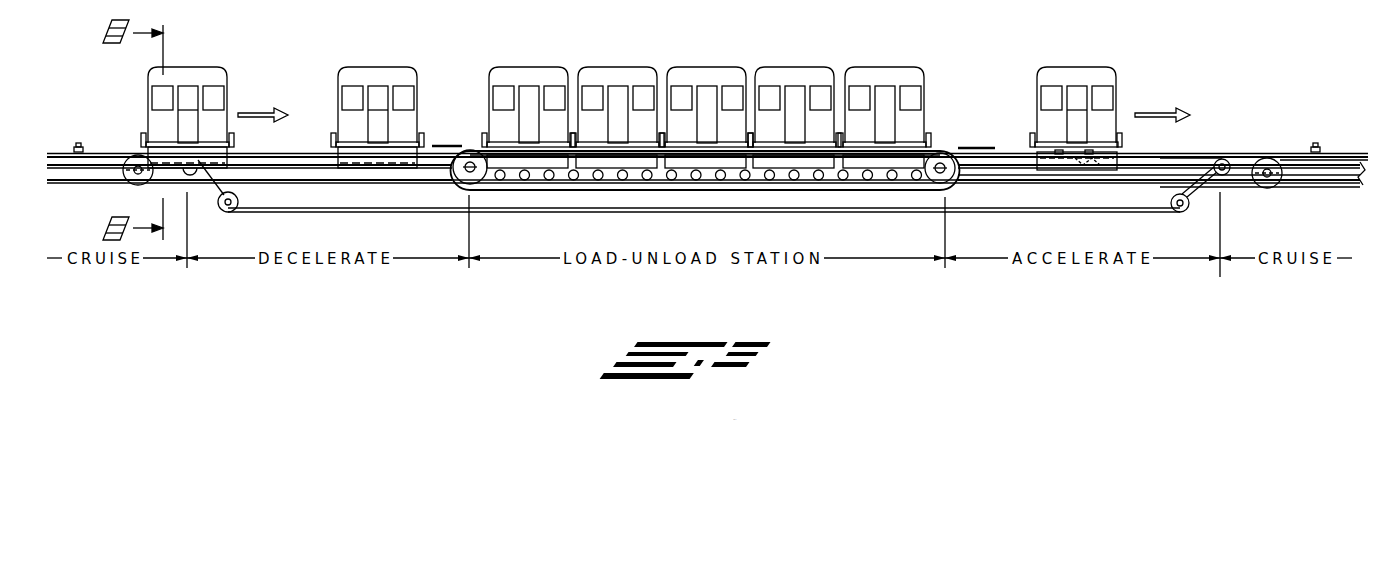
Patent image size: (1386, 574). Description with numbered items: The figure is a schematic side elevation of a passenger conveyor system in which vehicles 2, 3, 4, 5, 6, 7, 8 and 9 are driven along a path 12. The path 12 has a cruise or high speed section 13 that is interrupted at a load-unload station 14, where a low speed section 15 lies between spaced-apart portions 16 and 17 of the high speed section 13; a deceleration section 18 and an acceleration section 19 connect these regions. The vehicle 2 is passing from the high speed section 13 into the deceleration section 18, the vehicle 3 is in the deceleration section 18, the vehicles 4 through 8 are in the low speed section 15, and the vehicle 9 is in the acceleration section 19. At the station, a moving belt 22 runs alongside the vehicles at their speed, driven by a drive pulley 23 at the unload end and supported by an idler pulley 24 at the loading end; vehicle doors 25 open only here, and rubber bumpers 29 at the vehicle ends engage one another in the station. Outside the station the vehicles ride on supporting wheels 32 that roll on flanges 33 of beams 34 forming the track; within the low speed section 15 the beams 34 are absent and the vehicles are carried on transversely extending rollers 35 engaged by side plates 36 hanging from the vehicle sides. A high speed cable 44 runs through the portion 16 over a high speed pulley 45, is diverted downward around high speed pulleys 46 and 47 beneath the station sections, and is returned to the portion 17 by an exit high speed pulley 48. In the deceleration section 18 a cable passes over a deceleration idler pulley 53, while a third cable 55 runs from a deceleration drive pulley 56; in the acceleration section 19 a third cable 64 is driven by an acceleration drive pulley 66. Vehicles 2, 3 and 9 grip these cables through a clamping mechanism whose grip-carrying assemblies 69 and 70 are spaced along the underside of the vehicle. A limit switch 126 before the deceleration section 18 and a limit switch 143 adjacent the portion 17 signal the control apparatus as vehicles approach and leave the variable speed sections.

The vehicle 2 is at (196, 67).
The vehicle 3 is at (385, 67).
The vehicle 4 is at (532, 67).
The vehicle 5 is at (613, 67).
The vehicle 6 is at (706, 67).
The vehicle 7 is at (789, 67).
The vehicle 8 is at (884, 67).
The vehicle 9 is at (1077, 67).
The path 12 is at (1293, 177).
The high speed section 13 is at (98, 152).
The load-unload station 14 is at (820, 250).
The low speed section 15 is at (673, 202).
The portion of the high speed section 16 is at (62, 182).
The portion of the high speed section 17 is at (1320, 189).
The deceleration section 18 is at (297, 206).
The acceleration section 19 is at (1167, 156).
The belt 22 is at (935, 150).
The drive pulley 23 is at (958, 187).
The idler pulley 24 is at (465, 152).
The door 25 is at (192, 117).
The bumper 29 is at (144, 133).
The supporting wheel 32 is at (1033, 153).
The flange 33 is at (1356, 160).
The beam 34 is at (1347, 180).
The roller 35 is at (647, 181).
The side plate 36 is at (152, 153).
The high speed cable 44 is at (1330, 158).
The high speed pulley 45 is at (189, 172).
The high speed pulley 46 is at (240, 213).
The high speed pulley 47 is at (1183, 213).
The exit high speed pulley 48 is at (1221, 158).
The deceleration idler pulley 53 is at (385, 191).
The third cable 55 is at (263, 152).
The deceleration drive pulley 56 is at (134, 186).
The third cable 64 is at (1233, 190).
The acceleration drive pulley 66 is at (1263, 158).
The grip-carrying assembly 69 is at (1082, 171).
The grip-carrying assembly 70 is at (1066, 171).
The limit switch 126 is at (74, 146).
The limit switch 143 is at (1311, 147).